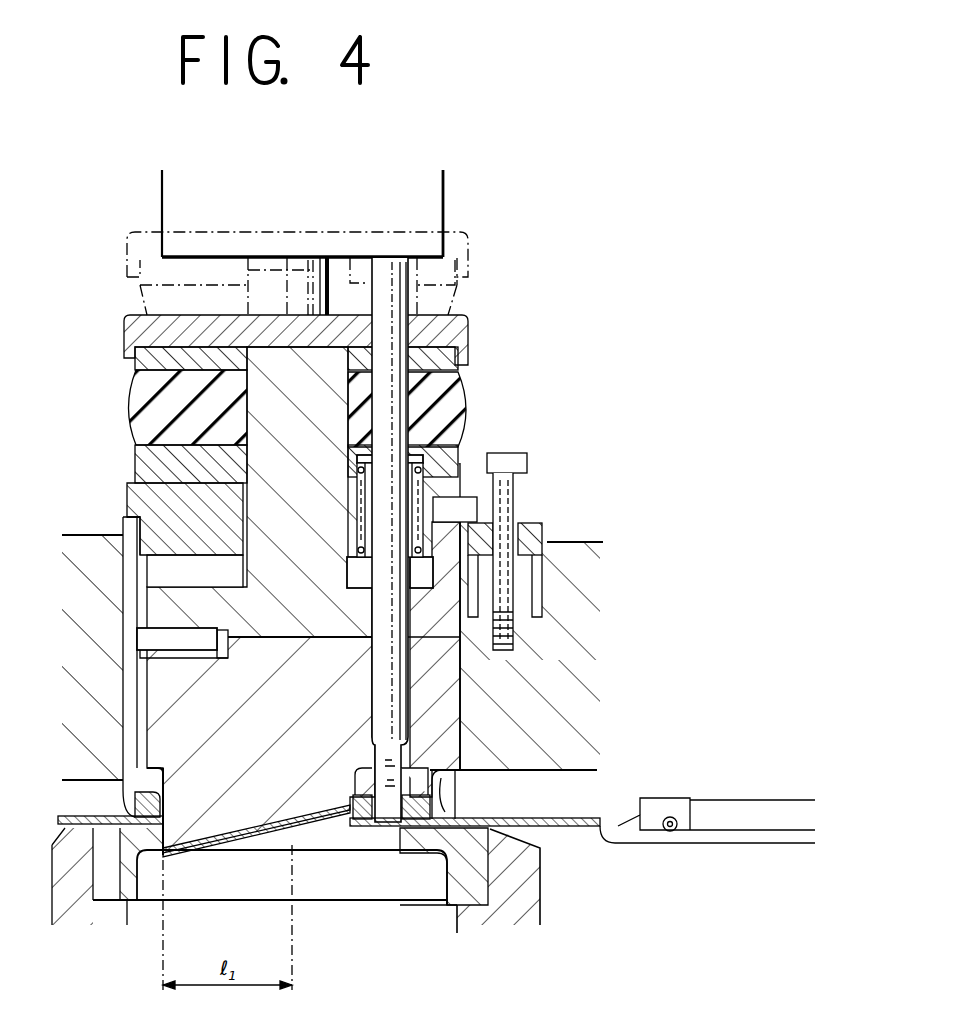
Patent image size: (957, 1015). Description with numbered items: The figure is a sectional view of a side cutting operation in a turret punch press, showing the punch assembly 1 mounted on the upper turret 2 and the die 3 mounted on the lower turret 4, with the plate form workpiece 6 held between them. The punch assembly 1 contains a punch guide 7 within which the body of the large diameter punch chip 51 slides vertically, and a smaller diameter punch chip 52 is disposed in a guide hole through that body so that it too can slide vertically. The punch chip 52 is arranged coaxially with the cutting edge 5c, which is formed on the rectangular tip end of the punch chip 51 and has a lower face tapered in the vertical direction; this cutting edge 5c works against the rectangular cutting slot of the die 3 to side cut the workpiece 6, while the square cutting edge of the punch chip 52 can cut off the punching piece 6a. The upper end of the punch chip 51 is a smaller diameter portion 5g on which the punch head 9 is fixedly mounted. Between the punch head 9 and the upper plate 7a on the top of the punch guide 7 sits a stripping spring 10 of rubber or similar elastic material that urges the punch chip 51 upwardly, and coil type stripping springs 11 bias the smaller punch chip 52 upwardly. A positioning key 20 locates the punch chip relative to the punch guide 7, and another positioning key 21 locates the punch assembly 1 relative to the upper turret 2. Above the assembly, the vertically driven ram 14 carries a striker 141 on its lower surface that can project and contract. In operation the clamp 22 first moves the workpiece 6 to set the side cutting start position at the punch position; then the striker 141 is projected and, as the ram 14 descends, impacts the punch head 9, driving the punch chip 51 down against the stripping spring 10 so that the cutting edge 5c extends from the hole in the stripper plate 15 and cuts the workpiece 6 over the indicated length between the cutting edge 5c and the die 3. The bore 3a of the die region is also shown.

The punch assembly 1 is at (112, 597).
The upper turret 2 is at (560, 655).
The die 3 is at (490, 862).
The bore of clamp plate 3a is at (352, 853).
The lower turret 4 is at (512, 905).
The cutting edge 5c is at (168, 843).
The smaller diameter portion 5g is at (267, 498).
The large diameter punch chip 51 is at (165, 703).
The punch chip 52 is at (398, 697).
The workpiece 6 is at (598, 826).
The punching piece 6a is at (237, 837).
The punch guide 7 is at (128, 744).
The upper plate 7a is at (150, 512).
The punch head 9 is at (463, 332).
The stripping spring 10 is at (462, 403).
The stripping springs 11 is at (437, 470).
The ram 14 is at (445, 205).
The striker 141 is at (325, 258).
The stripper plate 15 is at (413, 803).
The positioning key 20 is at (147, 640).
The positioning key 21 is at (468, 508).
The clamp 22 is at (745, 800).